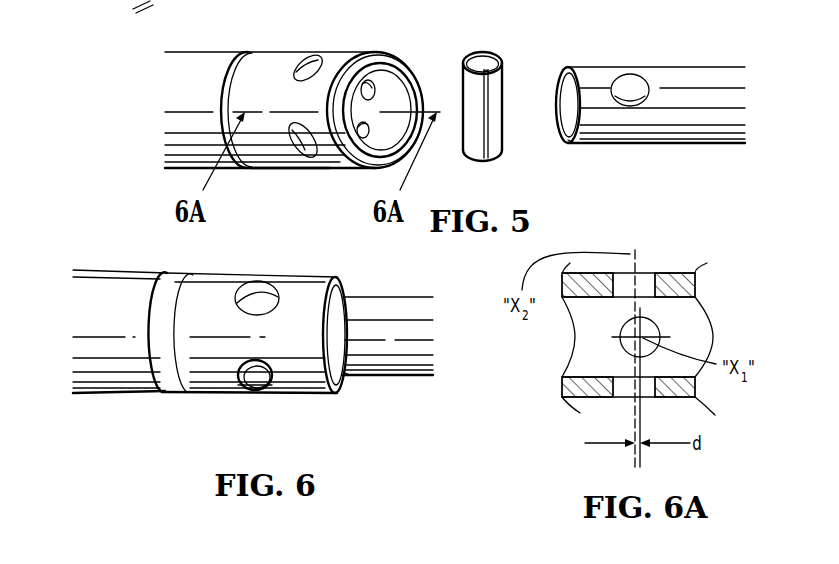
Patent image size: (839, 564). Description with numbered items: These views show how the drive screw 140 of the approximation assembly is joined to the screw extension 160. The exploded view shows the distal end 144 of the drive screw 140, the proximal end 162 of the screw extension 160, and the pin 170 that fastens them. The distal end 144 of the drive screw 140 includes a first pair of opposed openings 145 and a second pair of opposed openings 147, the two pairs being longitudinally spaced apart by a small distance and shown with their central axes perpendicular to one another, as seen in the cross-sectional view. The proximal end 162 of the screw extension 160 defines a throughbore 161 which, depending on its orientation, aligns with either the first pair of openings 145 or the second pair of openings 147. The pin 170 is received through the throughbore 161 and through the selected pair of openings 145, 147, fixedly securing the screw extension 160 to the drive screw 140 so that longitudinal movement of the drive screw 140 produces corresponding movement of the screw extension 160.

In FIG. 5, the drive screw 140 is at (231, 46).
In FIG. 6, the drive screw 140 is at (92, 400).
In FIG. 6A, the drive screw 140 is at (612, 244).
In FIG. 5, the distal end of drive screw 144 is at (283, 52).
In FIG. 6, the distal end of drive screw 144 is at (196, 379).
In FIG. 6A, the distal end of drive screw 144 is at (676, 396).
In FIG. 5, the first pair of opposed openings 145 is at (315, 60).
In FIG. 6, the first pair of opposed openings 145 is at (252, 290).
In FIG. 6A, the first pair of opposed openings 145 is at (655, 321).
In FIG. 5, the second pair of opposed openings 147 is at (366, 92).
In FIG. 6, the second pair of opposed openings 147 is at (235, 383).
In FIG. 6A, the second pair of opposed openings 147 is at (640, 279).
In FIG. 5, the screw extension 160 is at (732, 152).
In FIG. 6, the screw extension 160 is at (371, 297).
In FIG. 5, the throughbore 161 is at (636, 91).
In FIG. 5, the proximal end of screw extension 162 is at (590, 146).
In FIG. 6, the proximal end of screw extension 162 is at (367, 381).
In FIG. 5, the pin 170 is at (493, 82).
In FIG. 6, the pin 170 is at (262, 384).